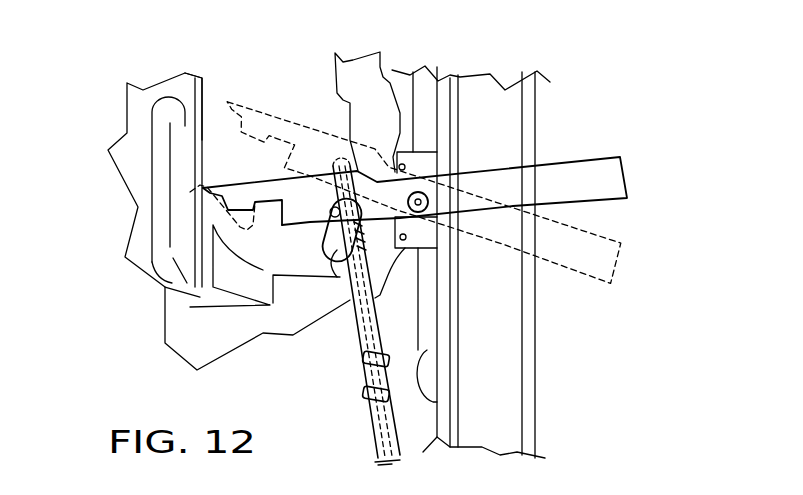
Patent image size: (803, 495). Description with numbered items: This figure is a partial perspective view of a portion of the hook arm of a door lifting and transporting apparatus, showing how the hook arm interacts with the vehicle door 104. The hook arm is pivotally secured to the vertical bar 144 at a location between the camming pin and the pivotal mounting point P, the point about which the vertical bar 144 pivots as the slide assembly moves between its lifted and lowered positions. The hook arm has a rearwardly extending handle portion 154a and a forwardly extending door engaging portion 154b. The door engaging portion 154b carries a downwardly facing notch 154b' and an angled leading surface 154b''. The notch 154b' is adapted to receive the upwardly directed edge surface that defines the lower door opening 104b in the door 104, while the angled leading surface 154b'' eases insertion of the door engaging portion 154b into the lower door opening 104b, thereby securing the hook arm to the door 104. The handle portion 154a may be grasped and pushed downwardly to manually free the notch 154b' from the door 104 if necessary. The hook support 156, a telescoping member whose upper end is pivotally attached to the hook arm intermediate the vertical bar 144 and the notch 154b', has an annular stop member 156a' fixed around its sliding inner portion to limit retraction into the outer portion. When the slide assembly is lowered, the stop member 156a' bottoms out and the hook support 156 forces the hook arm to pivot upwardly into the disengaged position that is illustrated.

The vehicle door 104 is at (197, 297).
The lower door opening 104b is at (217, 135).
The handle portion 154a is at (590, 162).
The door engaging portion 154b is at (169, 125).
The downwardly facing notch 154b' is at (276, 92).
The angled leading surface 154b'' is at (160, 134).
The vertical bar 144 is at (420, 380).
The hook support 156 is at (352, 322).
The annular stop member 156a' is at (328, 378).
The pivotal mounting point P is at (422, 193).